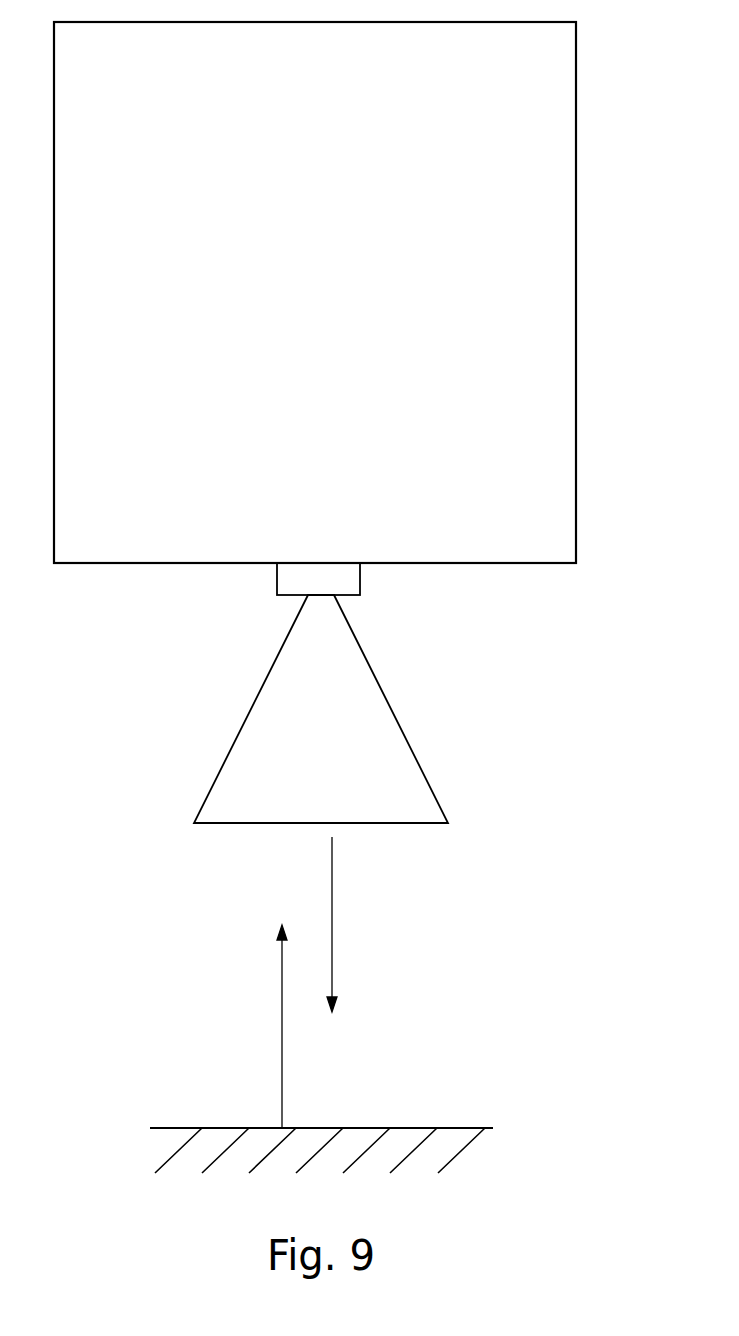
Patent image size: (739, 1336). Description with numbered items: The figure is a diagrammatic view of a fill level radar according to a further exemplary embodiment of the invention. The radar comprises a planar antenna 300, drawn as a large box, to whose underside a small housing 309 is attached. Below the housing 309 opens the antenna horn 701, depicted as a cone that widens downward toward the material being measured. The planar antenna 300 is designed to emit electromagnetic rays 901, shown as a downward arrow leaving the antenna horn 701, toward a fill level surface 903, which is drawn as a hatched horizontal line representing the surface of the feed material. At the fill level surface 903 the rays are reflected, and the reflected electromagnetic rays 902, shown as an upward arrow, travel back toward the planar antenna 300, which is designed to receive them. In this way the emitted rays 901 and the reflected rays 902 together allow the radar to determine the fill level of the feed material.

The planar antenna 300 is at (571, 598).
The housing 309 is at (365, 585).
The antenna horn 701 is at (402, 729).
The electromagnetic rays 901 is at (333, 922).
The reflected electromagnetic rays 902 is at (280, 1035).
The fill level surface 903 is at (460, 1128).